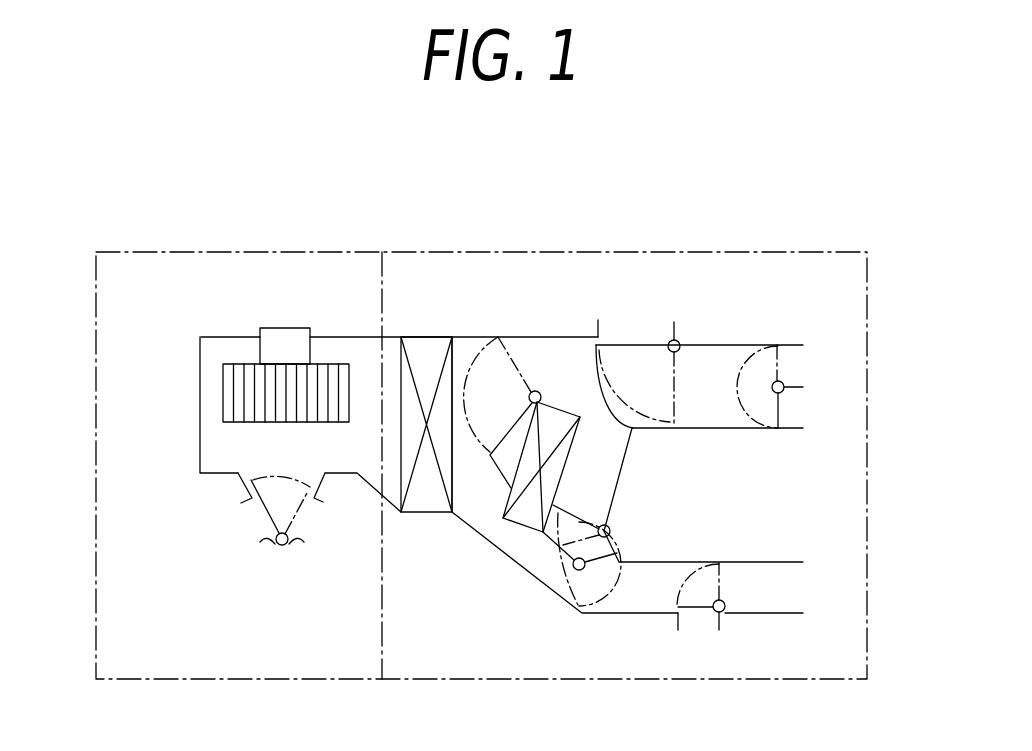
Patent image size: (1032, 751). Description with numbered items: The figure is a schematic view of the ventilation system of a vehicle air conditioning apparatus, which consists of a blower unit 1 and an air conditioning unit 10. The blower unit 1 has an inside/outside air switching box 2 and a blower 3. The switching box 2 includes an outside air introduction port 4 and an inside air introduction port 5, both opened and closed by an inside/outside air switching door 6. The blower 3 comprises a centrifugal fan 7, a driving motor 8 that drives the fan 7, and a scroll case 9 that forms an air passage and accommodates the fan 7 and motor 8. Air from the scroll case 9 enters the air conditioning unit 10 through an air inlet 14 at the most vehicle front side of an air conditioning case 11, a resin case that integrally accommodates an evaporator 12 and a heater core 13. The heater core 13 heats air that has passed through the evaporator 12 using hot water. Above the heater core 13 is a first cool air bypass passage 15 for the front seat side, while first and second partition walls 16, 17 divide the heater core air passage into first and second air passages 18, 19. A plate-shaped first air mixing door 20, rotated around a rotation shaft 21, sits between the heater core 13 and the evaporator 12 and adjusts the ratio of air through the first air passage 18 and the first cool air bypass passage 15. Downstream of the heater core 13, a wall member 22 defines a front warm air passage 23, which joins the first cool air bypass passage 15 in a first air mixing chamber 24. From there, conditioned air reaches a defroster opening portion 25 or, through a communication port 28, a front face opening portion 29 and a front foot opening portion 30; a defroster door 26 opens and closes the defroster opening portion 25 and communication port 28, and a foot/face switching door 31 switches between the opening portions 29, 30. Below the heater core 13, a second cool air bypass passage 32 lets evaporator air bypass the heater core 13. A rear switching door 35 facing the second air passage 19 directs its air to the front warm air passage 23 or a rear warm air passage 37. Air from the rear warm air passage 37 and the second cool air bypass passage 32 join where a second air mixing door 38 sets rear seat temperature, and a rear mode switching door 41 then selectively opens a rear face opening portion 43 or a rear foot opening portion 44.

The blower unit 1 is at (350, 205).
The inside/outside air switching box 2 is at (75, 497).
The blower 3 is at (75, 433).
The outside air introduction port 4 is at (253, 510).
The inside air introduction port 5 is at (310, 518).
The inside/outside air switching door 6 is at (261, 523).
The centrifugal fan 7 is at (225, 393).
The driving motor 8 is at (280, 335).
The scroll case 9 is at (200, 354).
The air conditioning unit 10 is at (752, 205).
The air conditioning case 11 is at (472, 352).
The evaporator 12 is at (424, 357).
The heater core 13 is at (518, 515).
The air inlet 14 is at (391, 337).
The first cool air bypass passage 15 is at (561, 375).
The first partition wall 16 is at (507, 472).
The second partition wall 17 is at (578, 372).
The first air passage 18 is at (563, 368).
The second air passage 19 is at (498, 500).
The first air mixing door 20 is at (531, 391).
The rotation shaft 21 is at (545, 385).
The wall member 22 is at (893, 497).
The front warm air passage 23 is at (893, 470).
The first air mixing chamber 24 is at (893, 444).
The defroster opening portion 25 is at (653, 333).
The defroster door 26 is at (621, 345).
The communication port 28 is at (685, 390).
The front face opening portion 29 is at (795, 367).
The front foot opening portion 30 is at (797, 400).
The foot/face switching door 31 is at (783, 415).
The second cool air bypass passage 32 is at (541, 553).
The rear switching door 35 is at (893, 523).
The rear warm air passage 37 is at (893, 548).
The second air mixing door 38 is at (590, 575).
The rear mode switching door 41 is at (683, 627).
The rear face opening portion 43 is at (798, 590).
The rear foot opening portion 44 is at (705, 623).